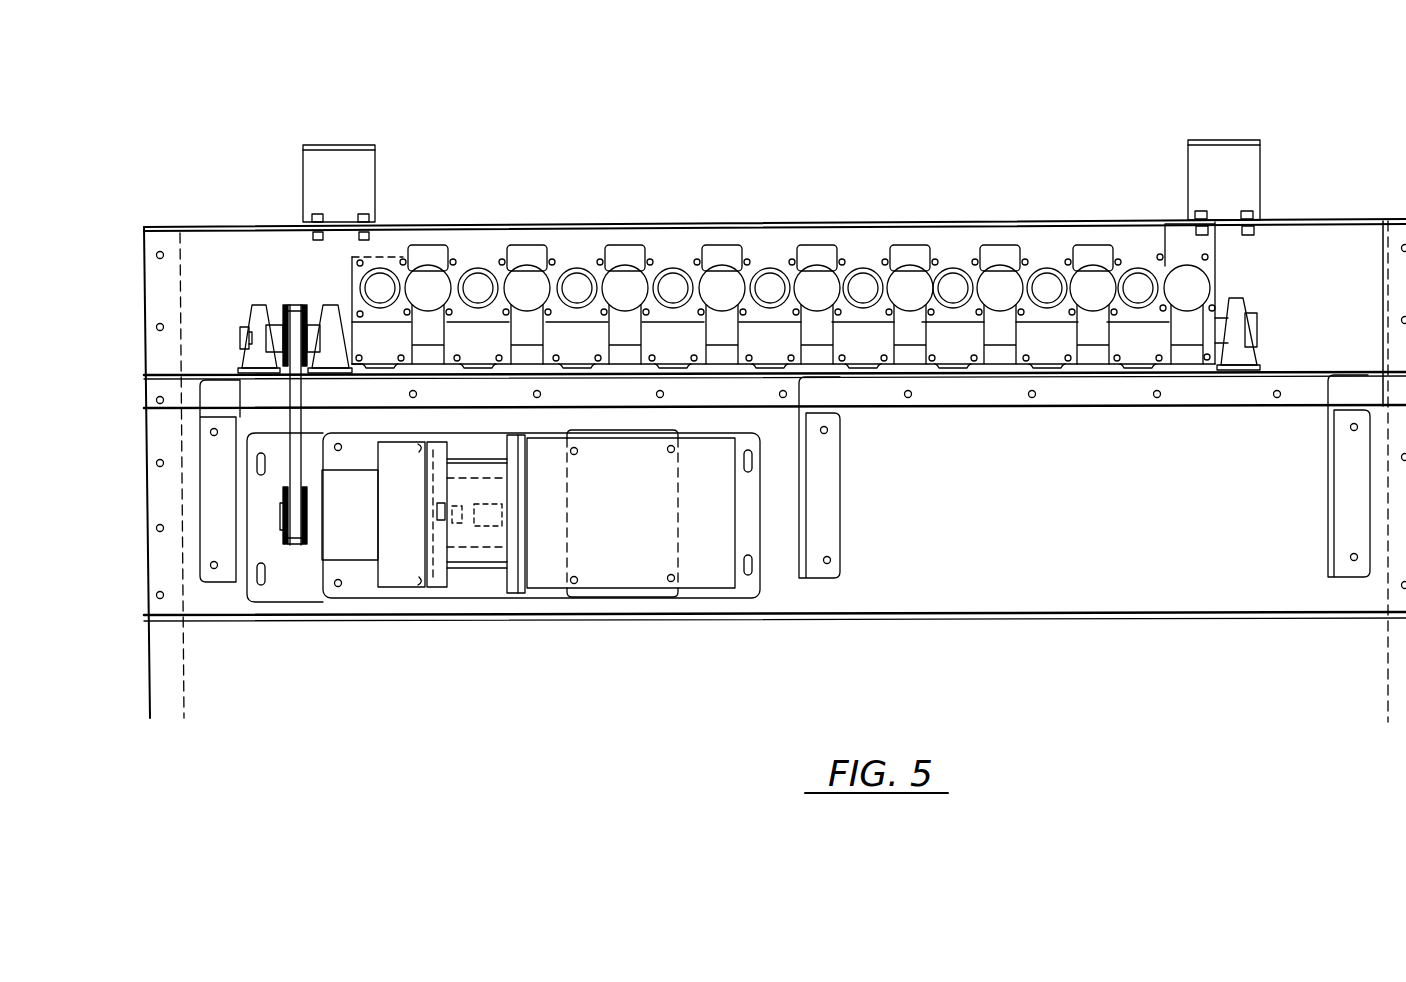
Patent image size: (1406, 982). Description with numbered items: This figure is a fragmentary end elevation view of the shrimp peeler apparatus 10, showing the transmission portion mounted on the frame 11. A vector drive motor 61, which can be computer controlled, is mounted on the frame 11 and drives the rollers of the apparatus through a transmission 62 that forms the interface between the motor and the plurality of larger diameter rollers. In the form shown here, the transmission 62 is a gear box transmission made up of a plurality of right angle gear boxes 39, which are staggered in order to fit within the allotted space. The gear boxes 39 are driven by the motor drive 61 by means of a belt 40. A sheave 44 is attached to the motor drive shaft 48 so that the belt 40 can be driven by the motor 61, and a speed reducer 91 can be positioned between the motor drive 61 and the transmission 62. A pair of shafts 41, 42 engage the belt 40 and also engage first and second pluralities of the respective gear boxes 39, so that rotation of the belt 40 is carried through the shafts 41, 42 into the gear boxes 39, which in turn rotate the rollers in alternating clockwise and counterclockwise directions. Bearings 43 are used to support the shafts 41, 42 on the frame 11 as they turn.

The shrimp peeler apparatus 10 is at (1233, 113).
The frame 11 is at (187, 667).
The right angle gear boxes 39 is at (783, 265).
The belt 40 is at (294, 310).
The shaft 41 is at (242, 336).
The shaft 42 is at (1001, 340).
The bearings 43 is at (255, 306).
The sheave 44 is at (290, 548).
The motor drive shaft 48 is at (283, 508).
The vector drive motor 61 is at (685, 598).
The transmission 62 is at (907, 165).
The speed reducer 91 is at (403, 557).